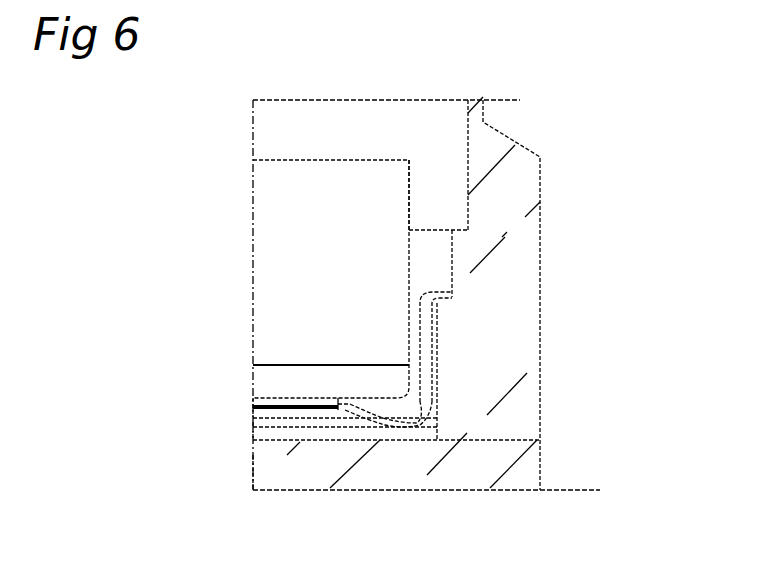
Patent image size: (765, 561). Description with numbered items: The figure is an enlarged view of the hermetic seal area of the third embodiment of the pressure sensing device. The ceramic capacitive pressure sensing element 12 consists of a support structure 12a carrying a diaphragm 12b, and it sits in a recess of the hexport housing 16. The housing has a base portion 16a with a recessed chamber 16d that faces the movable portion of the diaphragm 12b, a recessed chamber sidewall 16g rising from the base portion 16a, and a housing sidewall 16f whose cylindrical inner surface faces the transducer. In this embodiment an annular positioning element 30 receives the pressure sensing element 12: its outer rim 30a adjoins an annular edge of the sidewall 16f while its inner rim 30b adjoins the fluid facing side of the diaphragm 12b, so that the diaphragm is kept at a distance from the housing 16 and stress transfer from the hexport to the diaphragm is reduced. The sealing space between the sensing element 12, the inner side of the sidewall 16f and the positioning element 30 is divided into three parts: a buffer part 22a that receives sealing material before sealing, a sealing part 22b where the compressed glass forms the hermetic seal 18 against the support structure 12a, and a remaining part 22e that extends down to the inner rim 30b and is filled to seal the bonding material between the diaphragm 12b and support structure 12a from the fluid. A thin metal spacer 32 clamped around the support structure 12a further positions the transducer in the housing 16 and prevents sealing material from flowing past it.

The capacitive pressure sensing element 12 is at (250, 225).
The support structure 12a is at (293, 287).
The diaphragm 12b is at (285, 381).
The hexport housing 16 is at (525, 125).
The base portion 16a is at (300, 460).
The recessed chamber 16d is at (268, 433).
The sidewall 16f is at (510, 330).
The recessed chamber sidewall 16g is at (453, 299).
The hermetic seal 18 is at (437, 253).
The buffer part 22a is at (435, 197).
The sealing part 22b is at (430, 266).
The remaining part 22e is at (437, 392).
The annular positioning element 30 is at (430, 373).
The spring hook 30a is at (417, 404).
The inner rim 30b is at (338, 403).
The spacer 32 is at (448, 397).